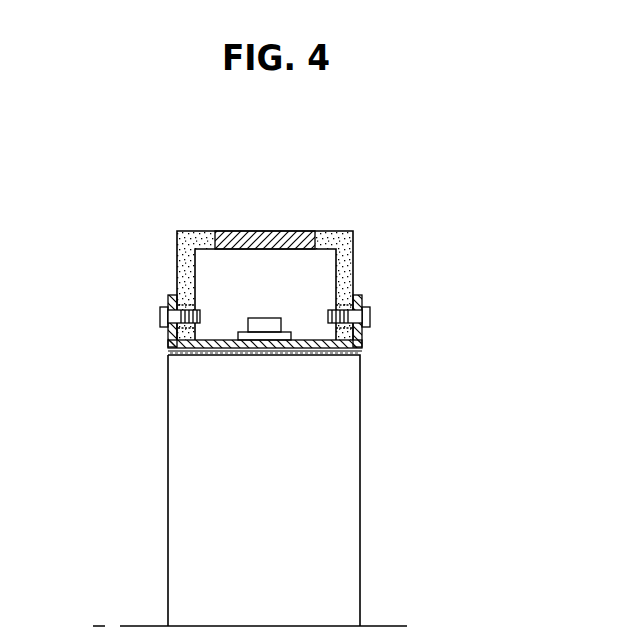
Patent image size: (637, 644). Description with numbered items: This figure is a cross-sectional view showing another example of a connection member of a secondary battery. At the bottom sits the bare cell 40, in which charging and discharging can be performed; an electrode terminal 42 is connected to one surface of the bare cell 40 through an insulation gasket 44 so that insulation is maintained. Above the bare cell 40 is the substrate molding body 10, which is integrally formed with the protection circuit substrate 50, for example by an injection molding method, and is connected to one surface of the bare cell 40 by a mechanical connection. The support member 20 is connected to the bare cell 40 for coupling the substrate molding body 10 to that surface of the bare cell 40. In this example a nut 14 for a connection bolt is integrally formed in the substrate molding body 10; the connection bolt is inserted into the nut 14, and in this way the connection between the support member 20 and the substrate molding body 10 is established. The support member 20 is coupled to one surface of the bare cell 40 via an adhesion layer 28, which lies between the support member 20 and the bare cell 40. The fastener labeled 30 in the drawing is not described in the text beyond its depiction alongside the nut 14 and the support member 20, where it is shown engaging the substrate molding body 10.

The substrate molding body 10 is at (178, 270).
The nut 14 is at (168, 332).
The support member 20 is at (374, 285).
The adhesion layer 28 is at (362, 353).
The bolt 30 is at (372, 317).
The bare cell 40 is at (185, 472).
The electrode terminal 42 is at (268, 340).
The insulation gasket 44 is at (243, 340).
The protection circuit substrate 50 is at (260, 240).